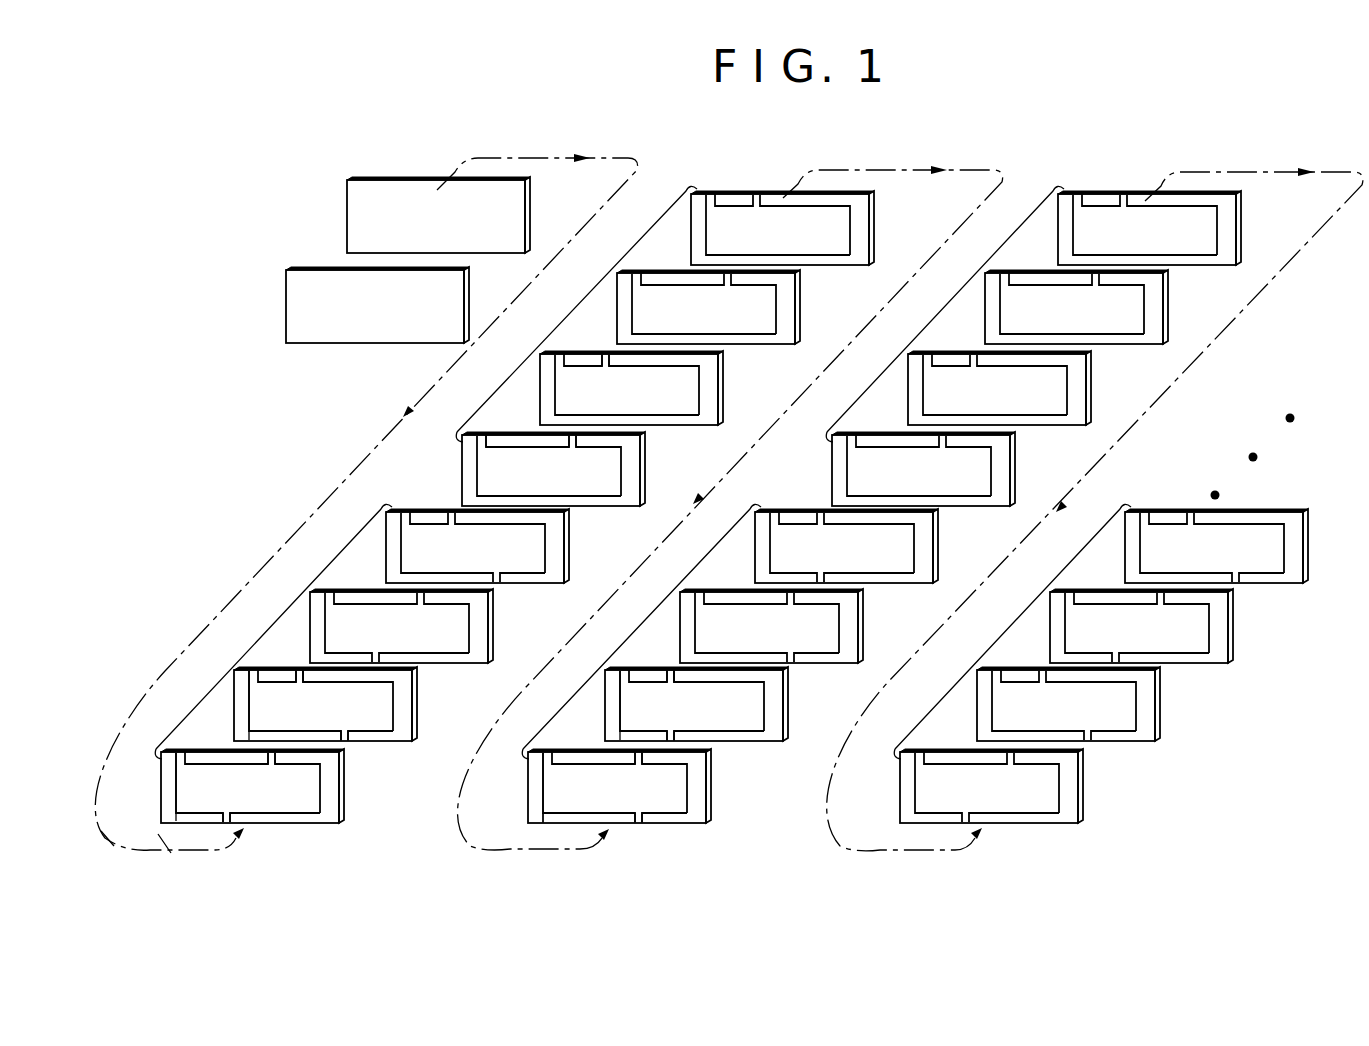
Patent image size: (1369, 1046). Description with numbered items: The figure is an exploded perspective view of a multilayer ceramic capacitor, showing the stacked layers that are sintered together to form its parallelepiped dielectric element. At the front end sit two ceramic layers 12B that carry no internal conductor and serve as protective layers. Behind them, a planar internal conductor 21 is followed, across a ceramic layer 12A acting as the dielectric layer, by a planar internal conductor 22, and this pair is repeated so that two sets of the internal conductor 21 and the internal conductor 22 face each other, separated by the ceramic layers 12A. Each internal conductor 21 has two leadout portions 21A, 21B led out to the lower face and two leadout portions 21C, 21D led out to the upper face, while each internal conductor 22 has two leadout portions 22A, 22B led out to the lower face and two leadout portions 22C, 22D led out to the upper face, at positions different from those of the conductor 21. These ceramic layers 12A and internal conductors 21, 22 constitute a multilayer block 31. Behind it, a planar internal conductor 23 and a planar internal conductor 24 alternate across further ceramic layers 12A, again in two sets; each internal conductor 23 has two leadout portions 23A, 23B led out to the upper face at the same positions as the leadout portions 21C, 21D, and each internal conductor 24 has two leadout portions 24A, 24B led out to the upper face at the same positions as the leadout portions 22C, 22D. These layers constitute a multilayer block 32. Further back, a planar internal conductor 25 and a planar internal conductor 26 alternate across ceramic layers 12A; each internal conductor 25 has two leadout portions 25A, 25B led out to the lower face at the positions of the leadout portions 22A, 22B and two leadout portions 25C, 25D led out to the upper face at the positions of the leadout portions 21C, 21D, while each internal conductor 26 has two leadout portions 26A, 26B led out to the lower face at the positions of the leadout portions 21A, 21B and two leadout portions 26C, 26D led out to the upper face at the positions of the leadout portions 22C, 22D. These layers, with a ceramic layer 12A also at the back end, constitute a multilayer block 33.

The ceramic layer 12A is at (866, 224).
The ceramic layer 12B is at (472, 237).
The internal conductor 21 is at (462, 626).
The leadout portion 21A is at (322, 816).
The leadout portion 21B is at (230, 824).
The leadout portion 21C is at (272, 755).
The leadout portion 21D is at (172, 763).
The internal conductor 22 is at (540, 556).
The leadout portion 22A is at (388, 738).
The leadout portion 22B is at (255, 738).
The leadout portion 22C is at (406, 682).
The leadout portion 22D is at (297, 678).
The internal conductor 23 is at (768, 308).
The leadout portion 23A is at (574, 438).
The leadout portion 23B is at (487, 445).
The internal conductor 24 is at (843, 242).
The leadout portion 24A is at (716, 366).
The leadout portion 24B is at (608, 357).
The internal conductor 25 is at (835, 626).
The leadout portion 25A is at (640, 822).
The leadout portion 25B is at (544, 822).
The leadout portion 25C is at (633, 755).
The leadout portion 25D is at (541, 763).
The internal conductor 26 is at (910, 556).
The leadout portion 26A is at (760, 738).
The leadout portion 26B is at (626, 738).
The leadout portion 26C is at (777, 682).
The leadout portion 26D is at (668, 678).
The multilayer block 31 is at (271, 621).
The multilayer block 32 is at (578, 306).
The multilayer block 33 is at (641, 621).